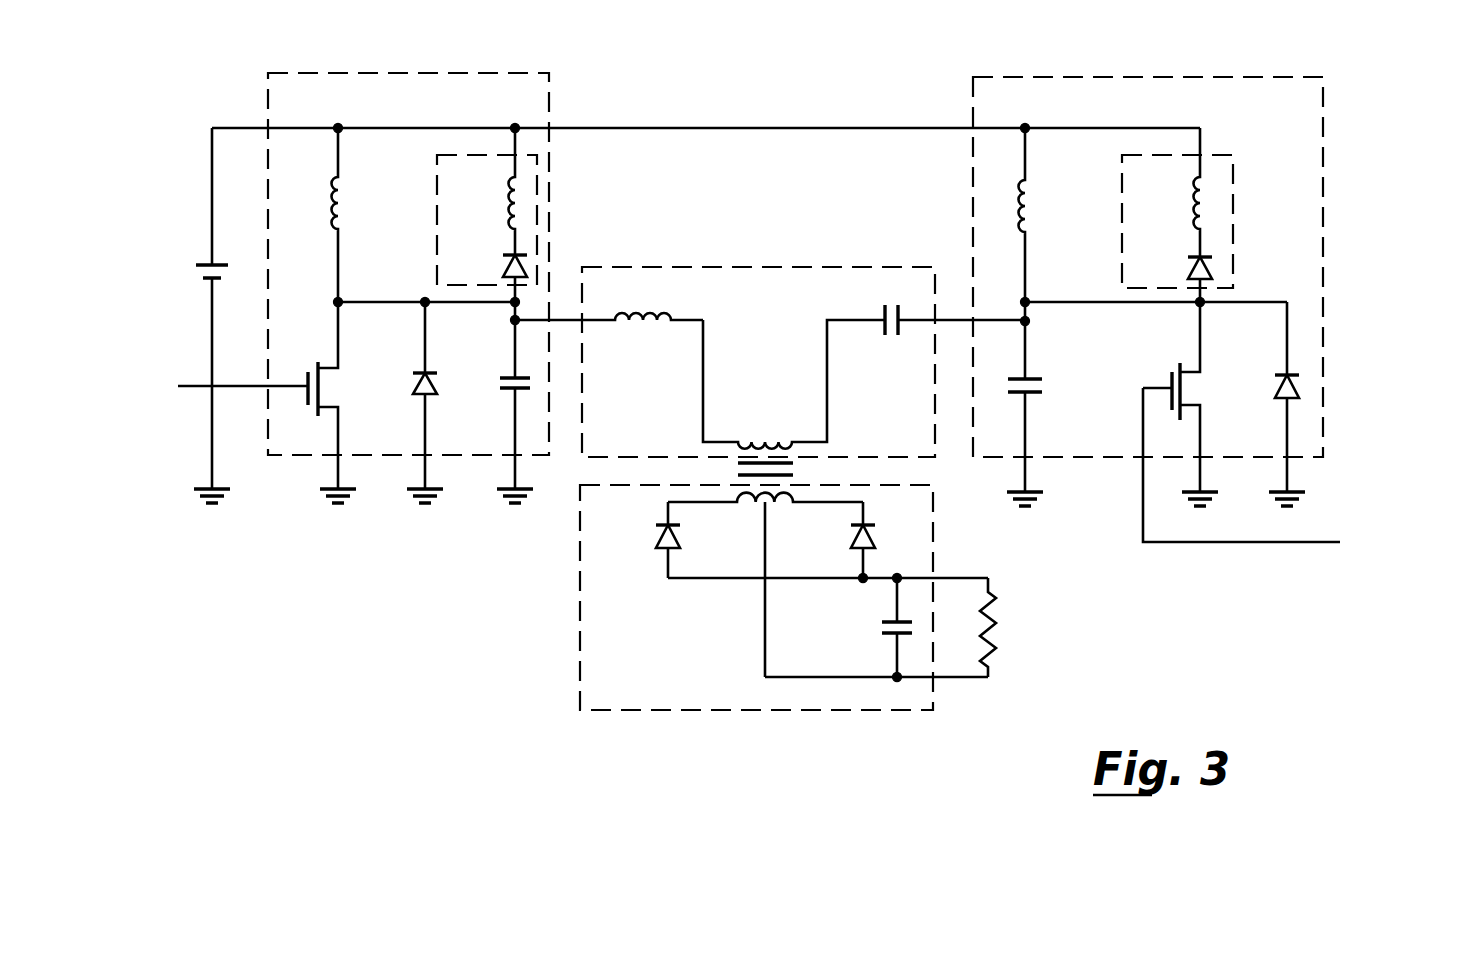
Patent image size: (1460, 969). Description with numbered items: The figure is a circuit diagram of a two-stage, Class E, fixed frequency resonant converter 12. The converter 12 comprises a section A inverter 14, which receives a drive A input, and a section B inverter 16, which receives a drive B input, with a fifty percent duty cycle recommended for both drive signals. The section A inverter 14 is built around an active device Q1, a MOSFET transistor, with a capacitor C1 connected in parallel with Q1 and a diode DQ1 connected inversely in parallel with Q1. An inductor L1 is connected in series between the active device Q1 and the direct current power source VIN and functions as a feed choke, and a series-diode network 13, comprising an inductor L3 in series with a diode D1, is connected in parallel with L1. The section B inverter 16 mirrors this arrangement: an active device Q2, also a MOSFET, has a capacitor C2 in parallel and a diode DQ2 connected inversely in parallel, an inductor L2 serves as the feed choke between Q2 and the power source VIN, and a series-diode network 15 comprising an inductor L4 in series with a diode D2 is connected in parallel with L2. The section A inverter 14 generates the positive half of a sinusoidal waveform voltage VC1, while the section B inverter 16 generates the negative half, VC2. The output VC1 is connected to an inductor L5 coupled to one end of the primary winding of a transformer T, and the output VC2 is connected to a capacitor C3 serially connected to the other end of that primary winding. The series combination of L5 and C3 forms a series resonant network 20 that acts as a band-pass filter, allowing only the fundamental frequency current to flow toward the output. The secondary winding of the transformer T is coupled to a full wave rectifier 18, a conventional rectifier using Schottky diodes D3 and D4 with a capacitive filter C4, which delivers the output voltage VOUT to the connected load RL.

The Class E resonant converter 12 is at (393, 593).
The series-diode network 13 is at (437, 249).
The section A inverter 14 is at (492, 73).
The series-diode network 15 is at (1233, 188).
The section B inverter 16 is at (1182, 77).
The full wave rectifier 18 is at (580, 597).
The series resonant network 20 is at (682, 267).
The inductor L1 is at (345, 205).
The inductor L2 is at (1032, 211).
The inductor L3 is at (506, 206).
The inductor L4 is at (1191, 204).
The inductor L5 is at (650, 312).
The diode D1 is at (503, 268).
The diode D2 is at (1188, 269).
The diode D3 is at (682, 528).
The diode D4 is at (850, 530).
The diode DQ1 is at (413, 385).
The diode DQ2 is at (1274, 386).
The active device Q1 is at (312, 409).
The active device Q2 is at (1172, 412).
The capacitor C1 is at (500, 383).
The capacitor C2 is at (1045, 386).
The capacitor C3 is at (892, 340).
The capacitor C4 is at (880, 627).
The load RL is at (1002, 628).
The transformer T is at (736, 468).
The direct current power source VIN is at (197, 266).
The section A inverter output voltage VC1 is at (508, 317).
The section B inverter output voltage VC2 is at (1033, 313).
The output voltage VOUT is at (1003, 553).